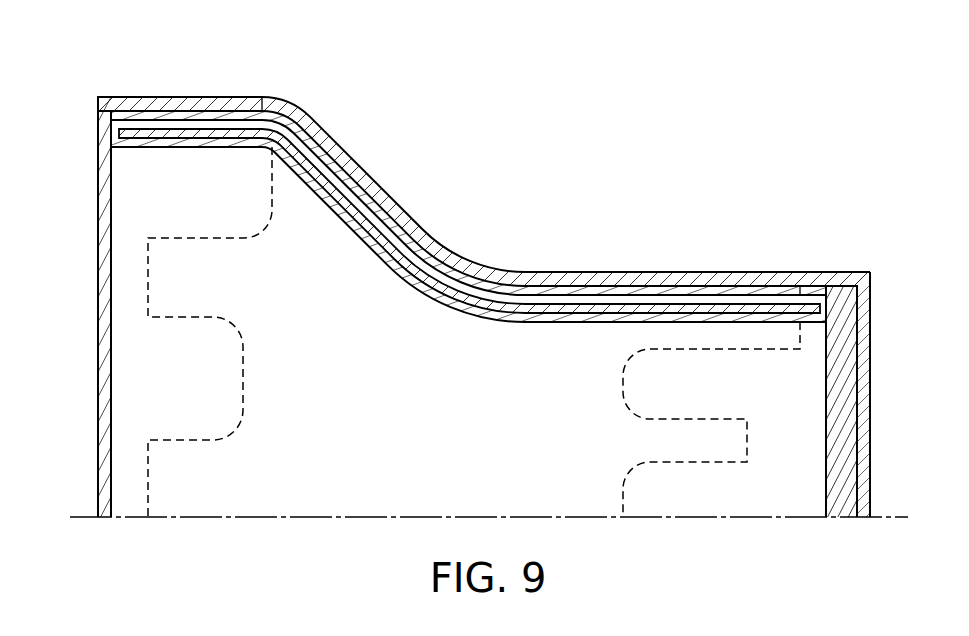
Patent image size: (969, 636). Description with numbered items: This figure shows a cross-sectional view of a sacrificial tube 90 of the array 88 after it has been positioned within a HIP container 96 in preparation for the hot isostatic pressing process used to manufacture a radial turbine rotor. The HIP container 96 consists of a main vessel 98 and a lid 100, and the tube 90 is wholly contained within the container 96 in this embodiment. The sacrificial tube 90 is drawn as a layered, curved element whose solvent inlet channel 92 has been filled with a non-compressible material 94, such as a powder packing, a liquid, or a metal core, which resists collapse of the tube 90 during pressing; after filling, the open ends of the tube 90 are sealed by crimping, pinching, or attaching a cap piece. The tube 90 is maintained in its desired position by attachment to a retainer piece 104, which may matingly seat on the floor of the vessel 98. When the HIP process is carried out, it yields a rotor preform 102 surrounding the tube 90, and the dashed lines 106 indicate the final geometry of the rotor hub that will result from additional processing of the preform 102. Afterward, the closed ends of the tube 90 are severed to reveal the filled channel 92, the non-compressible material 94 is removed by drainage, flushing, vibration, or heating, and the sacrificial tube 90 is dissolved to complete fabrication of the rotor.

The array of sacrificial tubes 88 is at (484, 214).
The sacrificial tube 90 is at (362, 217).
The solvent inlet channel 92 is at (432, 269).
The non-compressible material 94 is at (505, 300).
The HIP container 96 is at (98, 98).
The main vessel 98 is at (655, 273).
The lid 100 is at (98, 299).
The rotor preform 102 is at (413, 416).
The retainer piece 104 is at (845, 385).
The dashed lines 106 is at (247, 370).